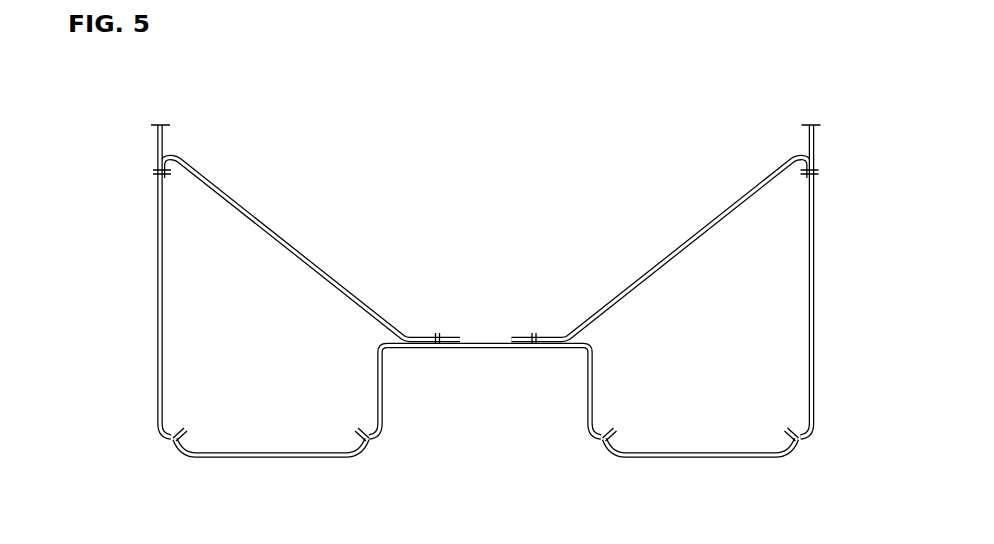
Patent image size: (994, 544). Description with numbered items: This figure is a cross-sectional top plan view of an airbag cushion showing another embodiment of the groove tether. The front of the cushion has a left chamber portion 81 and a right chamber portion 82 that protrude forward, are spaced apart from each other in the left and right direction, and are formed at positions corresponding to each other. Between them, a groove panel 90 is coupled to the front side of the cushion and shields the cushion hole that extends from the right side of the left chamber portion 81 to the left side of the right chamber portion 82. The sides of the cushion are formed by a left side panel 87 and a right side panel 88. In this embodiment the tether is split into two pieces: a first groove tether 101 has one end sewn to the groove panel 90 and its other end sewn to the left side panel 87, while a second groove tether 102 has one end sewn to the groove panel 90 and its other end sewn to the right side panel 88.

The left chamber portion 81 is at (272, 458).
The right chamber portion 82 is at (697, 458).
The left side panel 87 is at (157, 288).
The right side panel 88 is at (815, 253).
The groove panel 90 is at (480, 348).
The first groove tether 101 is at (298, 247).
The second groove tether 102 is at (682, 245).